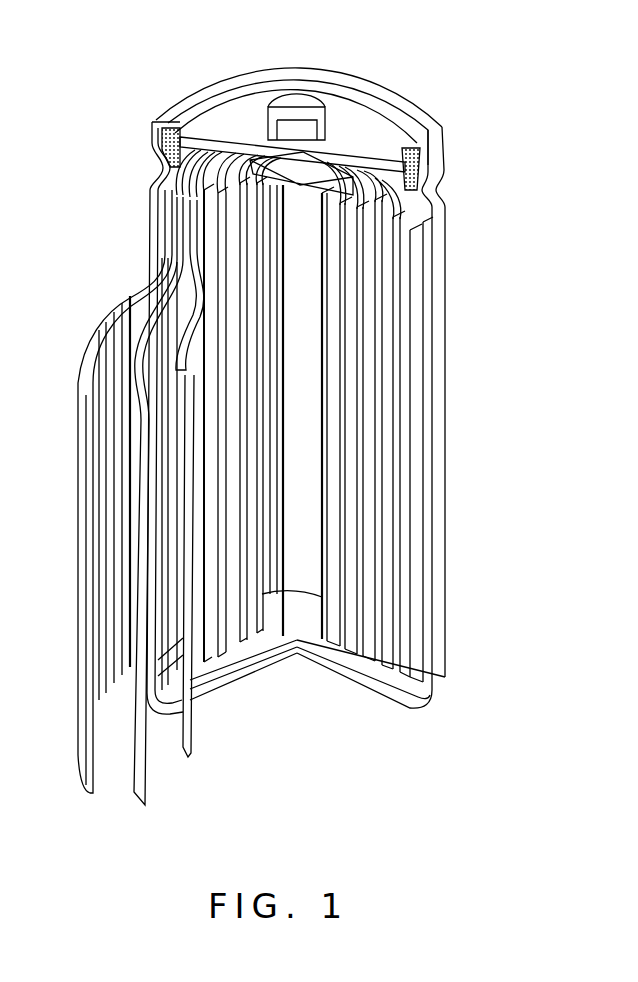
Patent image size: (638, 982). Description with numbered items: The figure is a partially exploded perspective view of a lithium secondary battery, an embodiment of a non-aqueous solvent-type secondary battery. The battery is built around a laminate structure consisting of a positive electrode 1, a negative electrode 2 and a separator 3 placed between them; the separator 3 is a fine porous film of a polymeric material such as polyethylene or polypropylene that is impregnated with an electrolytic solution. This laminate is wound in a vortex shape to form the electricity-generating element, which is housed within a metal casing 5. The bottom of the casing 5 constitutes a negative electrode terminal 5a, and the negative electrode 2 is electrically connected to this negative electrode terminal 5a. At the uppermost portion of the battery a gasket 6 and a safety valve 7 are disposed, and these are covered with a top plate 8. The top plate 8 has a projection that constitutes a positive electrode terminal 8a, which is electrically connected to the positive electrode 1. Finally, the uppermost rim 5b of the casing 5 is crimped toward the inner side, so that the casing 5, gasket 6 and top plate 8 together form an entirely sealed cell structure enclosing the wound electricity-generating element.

The positive electrode 1 is at (191, 745).
The negative electrode 2 is at (80, 483).
The separator 3 is at (140, 795).
The metal casing 5 is at (447, 443).
The negative electrode terminal 5a is at (237, 686).
The uppermost rim 5b is at (432, 131).
The gasket 6 is at (158, 133).
The safety valve 7 is at (290, 125).
The top plate 8 is at (383, 125).
The positive electrode terminal 8a is at (303, 100).